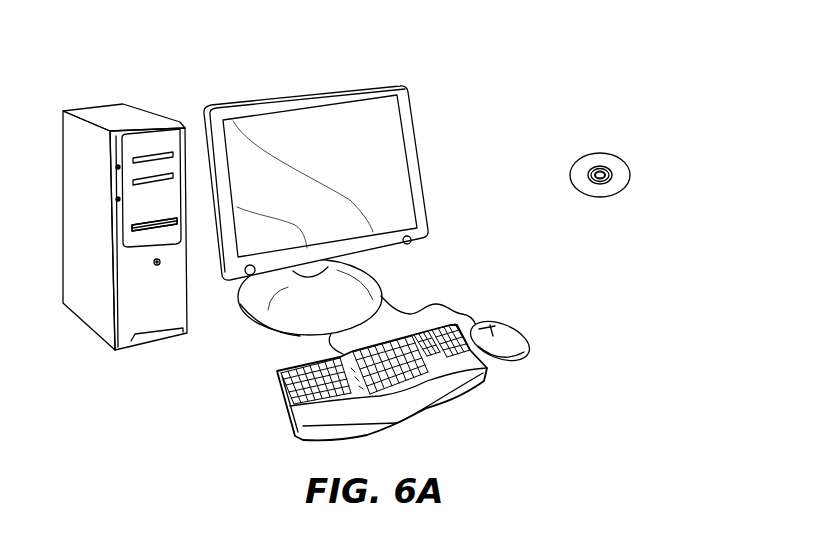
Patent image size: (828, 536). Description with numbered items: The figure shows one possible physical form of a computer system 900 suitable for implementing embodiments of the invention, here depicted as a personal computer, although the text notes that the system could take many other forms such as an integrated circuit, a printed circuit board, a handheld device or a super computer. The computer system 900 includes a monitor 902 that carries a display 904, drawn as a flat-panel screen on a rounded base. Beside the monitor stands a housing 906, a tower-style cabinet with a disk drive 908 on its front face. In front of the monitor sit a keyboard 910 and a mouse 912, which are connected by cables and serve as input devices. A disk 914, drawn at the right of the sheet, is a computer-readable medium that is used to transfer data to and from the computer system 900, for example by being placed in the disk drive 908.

The computer system 900 is at (526, 73).
The monitor 902 is at (417, 183).
The display 904 is at (380, 123).
The housing 906 is at (112, 113).
The disk drive 908 is at (163, 220).
The keyboard 910 is at (291, 413).
The mouse 912 is at (522, 333).
The disk 914 is at (617, 153).